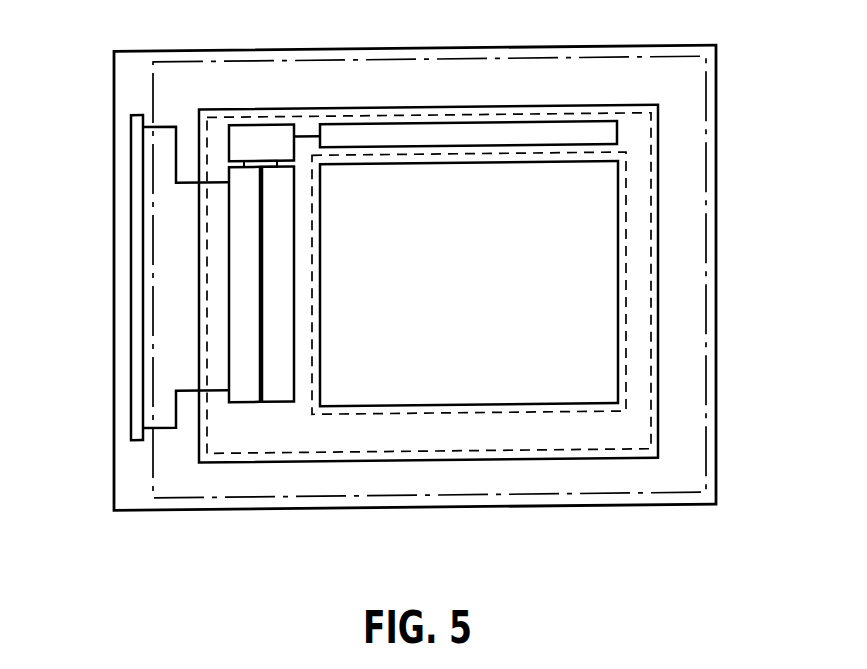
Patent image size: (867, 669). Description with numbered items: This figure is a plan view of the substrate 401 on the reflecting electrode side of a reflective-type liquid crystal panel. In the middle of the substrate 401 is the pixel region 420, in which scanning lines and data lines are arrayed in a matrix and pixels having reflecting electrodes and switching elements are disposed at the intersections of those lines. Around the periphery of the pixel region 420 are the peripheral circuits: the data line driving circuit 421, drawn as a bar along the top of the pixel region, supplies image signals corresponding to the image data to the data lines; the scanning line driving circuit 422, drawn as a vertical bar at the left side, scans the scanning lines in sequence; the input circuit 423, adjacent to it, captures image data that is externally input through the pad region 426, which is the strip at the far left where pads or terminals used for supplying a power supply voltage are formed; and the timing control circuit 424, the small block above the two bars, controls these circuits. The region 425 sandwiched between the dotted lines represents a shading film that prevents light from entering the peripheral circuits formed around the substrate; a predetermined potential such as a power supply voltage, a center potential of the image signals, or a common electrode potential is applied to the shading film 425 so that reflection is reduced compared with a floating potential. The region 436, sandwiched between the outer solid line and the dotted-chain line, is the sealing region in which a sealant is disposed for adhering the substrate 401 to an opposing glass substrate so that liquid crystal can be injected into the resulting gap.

The substrate on the reflecting electrode side 401 is at (716, 155).
The pixel region 420 is at (593, 265).
The data line driving circuit 421 is at (446, 138).
The scanning line driving circuit 422 is at (283, 392).
The input circuit 423 is at (245, 393).
The timing control circuit 424 is at (250, 138).
The shading film 425 is at (640, 329).
The pad region 426 is at (128, 385).
The sealing region 436 is at (693, 413).